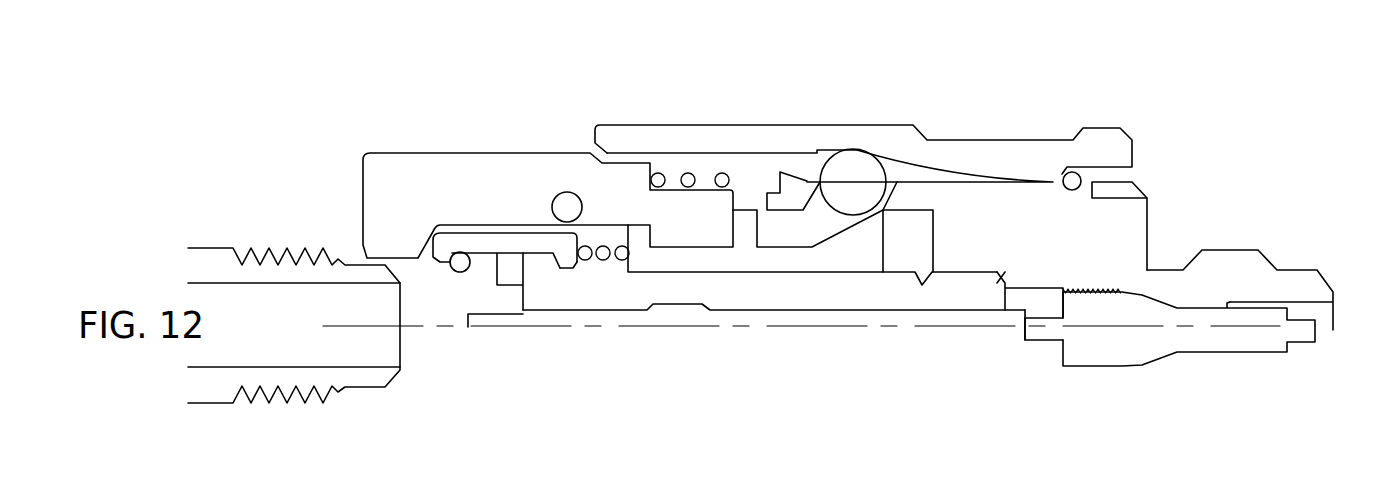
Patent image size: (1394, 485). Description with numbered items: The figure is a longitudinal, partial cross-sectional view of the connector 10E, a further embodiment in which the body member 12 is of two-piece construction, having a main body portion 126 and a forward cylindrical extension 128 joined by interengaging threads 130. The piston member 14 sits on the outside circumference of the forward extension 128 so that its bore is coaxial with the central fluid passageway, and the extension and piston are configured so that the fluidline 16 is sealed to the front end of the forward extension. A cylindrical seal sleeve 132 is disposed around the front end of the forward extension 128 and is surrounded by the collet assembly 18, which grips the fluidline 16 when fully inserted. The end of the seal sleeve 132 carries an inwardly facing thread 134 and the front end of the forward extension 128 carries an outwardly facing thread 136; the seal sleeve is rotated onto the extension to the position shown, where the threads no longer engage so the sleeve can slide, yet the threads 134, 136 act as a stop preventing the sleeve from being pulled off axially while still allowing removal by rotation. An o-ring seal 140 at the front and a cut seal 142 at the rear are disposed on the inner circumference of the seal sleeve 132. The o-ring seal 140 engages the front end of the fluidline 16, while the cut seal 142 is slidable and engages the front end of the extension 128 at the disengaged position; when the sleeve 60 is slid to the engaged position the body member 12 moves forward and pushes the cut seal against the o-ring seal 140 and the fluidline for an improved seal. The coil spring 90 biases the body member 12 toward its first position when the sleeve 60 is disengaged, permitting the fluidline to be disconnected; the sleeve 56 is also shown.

The connector 10E is at (826, 99).
The body member 12 is at (1286, 231).
The piston member 14 is at (858, 262).
The fluidline 16 is at (203, 227).
The collet assembly 18 is at (380, 138).
The sleeve 56 is at (437, 0).
The sleeve 60 is at (977, 155).
The coil spring 90 is at (692, 174).
The main body portion 126 is at (1138, 232).
The forward cylindrical extension 128 is at (780, 288).
The interengaging threads 130 is at (982, 280).
The seal sleeve 132 is at (486, 245).
The inwardly facing thread 134 is at (567, 262).
The outwardly facing thread 136 is at (538, 258).
The o-ring seal 140 is at (460, 268).
The cut seal 142 is at (512, 275).